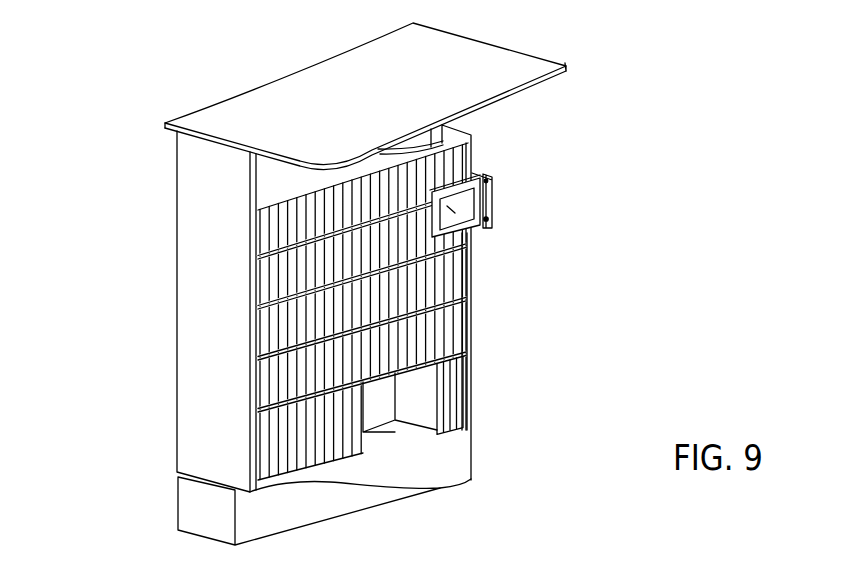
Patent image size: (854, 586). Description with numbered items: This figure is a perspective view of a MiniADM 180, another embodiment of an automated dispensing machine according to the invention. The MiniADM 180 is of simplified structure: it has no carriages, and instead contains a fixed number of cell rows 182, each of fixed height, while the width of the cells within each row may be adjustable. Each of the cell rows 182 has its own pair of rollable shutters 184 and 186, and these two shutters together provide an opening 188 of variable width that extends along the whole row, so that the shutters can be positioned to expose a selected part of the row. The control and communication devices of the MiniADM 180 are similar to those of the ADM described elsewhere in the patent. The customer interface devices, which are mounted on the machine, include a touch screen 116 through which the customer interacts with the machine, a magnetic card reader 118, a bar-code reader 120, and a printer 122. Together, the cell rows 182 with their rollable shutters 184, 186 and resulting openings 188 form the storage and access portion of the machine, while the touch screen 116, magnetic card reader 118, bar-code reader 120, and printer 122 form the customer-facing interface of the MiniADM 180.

The MiniADM 180 is at (150, 352).
The cell rows 182 is at (270, 450).
The rollable shutter 184 is at (333, 460).
The rollable shutter 186 is at (448, 393).
The opening 188 is at (395, 432).
The touch screen 116 is at (468, 240).
The magnetic card reader 118 is at (487, 182).
The bar-code reader 120 is at (482, 228).
The printer 122 is at (488, 221).